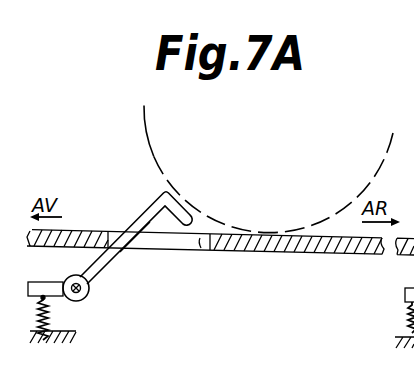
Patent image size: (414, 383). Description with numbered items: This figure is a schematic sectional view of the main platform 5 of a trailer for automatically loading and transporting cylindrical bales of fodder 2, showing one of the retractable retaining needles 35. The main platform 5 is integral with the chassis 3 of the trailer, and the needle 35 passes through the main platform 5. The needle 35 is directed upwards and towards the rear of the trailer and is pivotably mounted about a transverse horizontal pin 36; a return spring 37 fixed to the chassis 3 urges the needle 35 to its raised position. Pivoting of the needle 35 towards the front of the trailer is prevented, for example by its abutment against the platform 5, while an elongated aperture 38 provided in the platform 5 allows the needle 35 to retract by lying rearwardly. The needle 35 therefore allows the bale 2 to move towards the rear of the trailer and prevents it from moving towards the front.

The cylindrical bale of fodder 2 is at (144, 139).
The chassis 3 is at (67, 337).
The main platform 5 is at (263, 251).
The retractable retaining needle 35 is at (121, 253).
The transverse horizontal pin 36 is at (89, 289).
The return spring 37 is at (46, 315).
The elongated aperture 38 is at (203, 251).